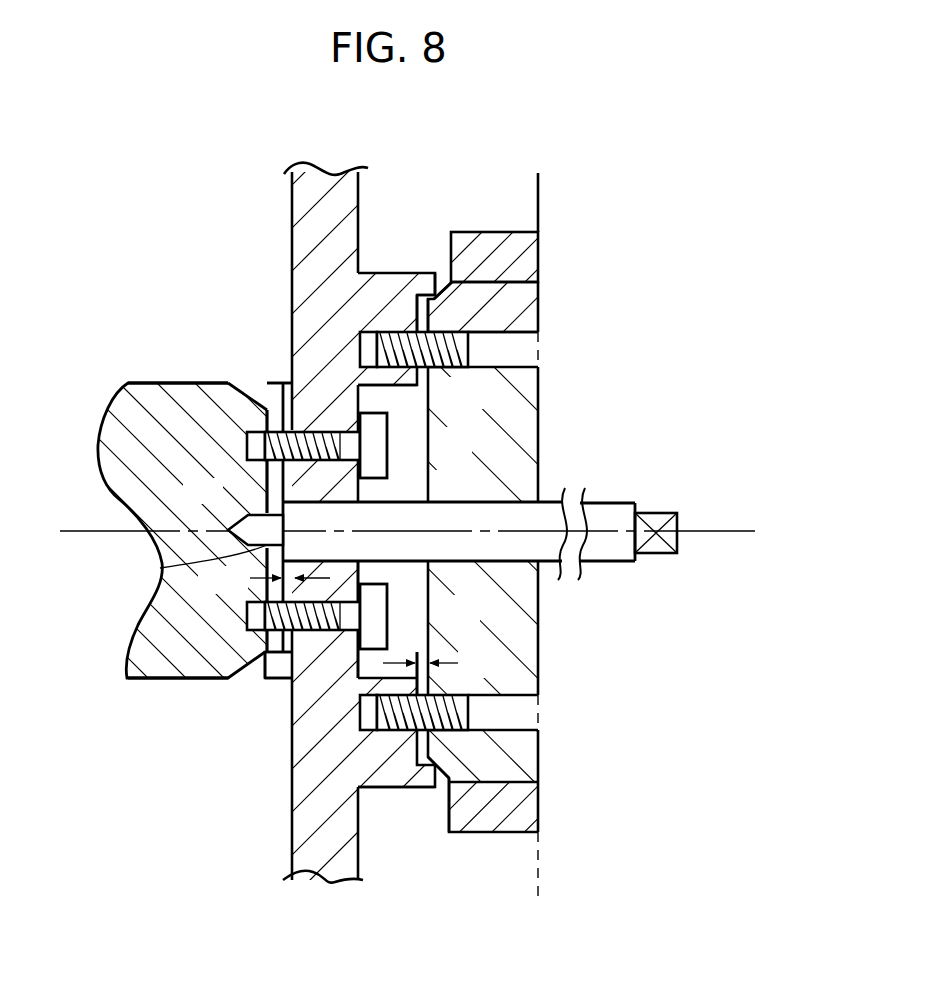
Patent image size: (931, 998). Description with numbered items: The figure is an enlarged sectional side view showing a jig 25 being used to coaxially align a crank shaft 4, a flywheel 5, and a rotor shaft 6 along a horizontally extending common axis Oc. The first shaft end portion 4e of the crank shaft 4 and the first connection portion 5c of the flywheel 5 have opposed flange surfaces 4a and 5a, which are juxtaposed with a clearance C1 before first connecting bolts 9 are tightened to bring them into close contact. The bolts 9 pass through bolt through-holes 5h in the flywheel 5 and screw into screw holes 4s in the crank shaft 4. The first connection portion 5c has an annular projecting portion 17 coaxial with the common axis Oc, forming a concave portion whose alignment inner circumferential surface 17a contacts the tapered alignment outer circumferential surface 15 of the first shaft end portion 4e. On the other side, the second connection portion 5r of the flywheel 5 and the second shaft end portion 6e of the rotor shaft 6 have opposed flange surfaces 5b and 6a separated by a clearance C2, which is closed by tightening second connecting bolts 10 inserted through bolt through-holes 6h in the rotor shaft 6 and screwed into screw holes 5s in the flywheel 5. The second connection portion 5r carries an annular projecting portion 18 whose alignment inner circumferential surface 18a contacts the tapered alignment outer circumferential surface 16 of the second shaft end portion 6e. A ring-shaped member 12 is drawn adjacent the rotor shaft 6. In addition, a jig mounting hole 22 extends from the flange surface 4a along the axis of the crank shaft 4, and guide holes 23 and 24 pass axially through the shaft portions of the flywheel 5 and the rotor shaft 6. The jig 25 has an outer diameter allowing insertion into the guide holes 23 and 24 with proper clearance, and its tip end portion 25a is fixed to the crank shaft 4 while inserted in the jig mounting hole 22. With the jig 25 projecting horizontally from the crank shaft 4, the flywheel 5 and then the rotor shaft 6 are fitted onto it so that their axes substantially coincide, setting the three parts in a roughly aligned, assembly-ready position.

The crank shaft 4 is at (106, 432).
The flange surface 4a is at (307, 442).
The first shaft end portion 4e is at (247, 397).
The screw holes 4s is at (214, 383).
The flywheel 5 is at (316, 870).
The flange surface 5a is at (357, 645).
The flange surface 5b is at (432, 380).
The first connection portion 5c is at (275, 686).
The bolt through-holes 5h is at (283, 397).
The second connection portion 5r is at (412, 792).
The screw holes 5s is at (358, 338).
The rotor shaft 6 is at (500, 768).
The flange surface 6a is at (420, 304).
The second shaft end portion 6e is at (446, 810).
The bolt through-holes 6h is at (500, 350).
The first connecting bolts 9 is at (390, 443).
The second connecting bolts 10 is at (470, 322).
The ring 12 is at (502, 230).
The alignment outer circumferential surface 15 is at (238, 382).
The alignment outer circumferential surface 16 is at (436, 290).
The annular projecting portion 17 is at (263, 653).
The alignment inner circumferential surface 17a is at (265, 668).
The annular projecting portion 18 is at (442, 788).
The alignment inner circumferential surface 18a is at (448, 290).
The jig mounting hole 22 is at (260, 513).
The guide hole 23 is at (402, 487).
The guide hole 24 is at (534, 566).
The jig 25 is at (617, 502).
The tip end portion 25a is at (165, 570).
The clearance C1 is at (267, 579).
The clearance C2 is at (442, 662).
The common axis Oc is at (431, 536).